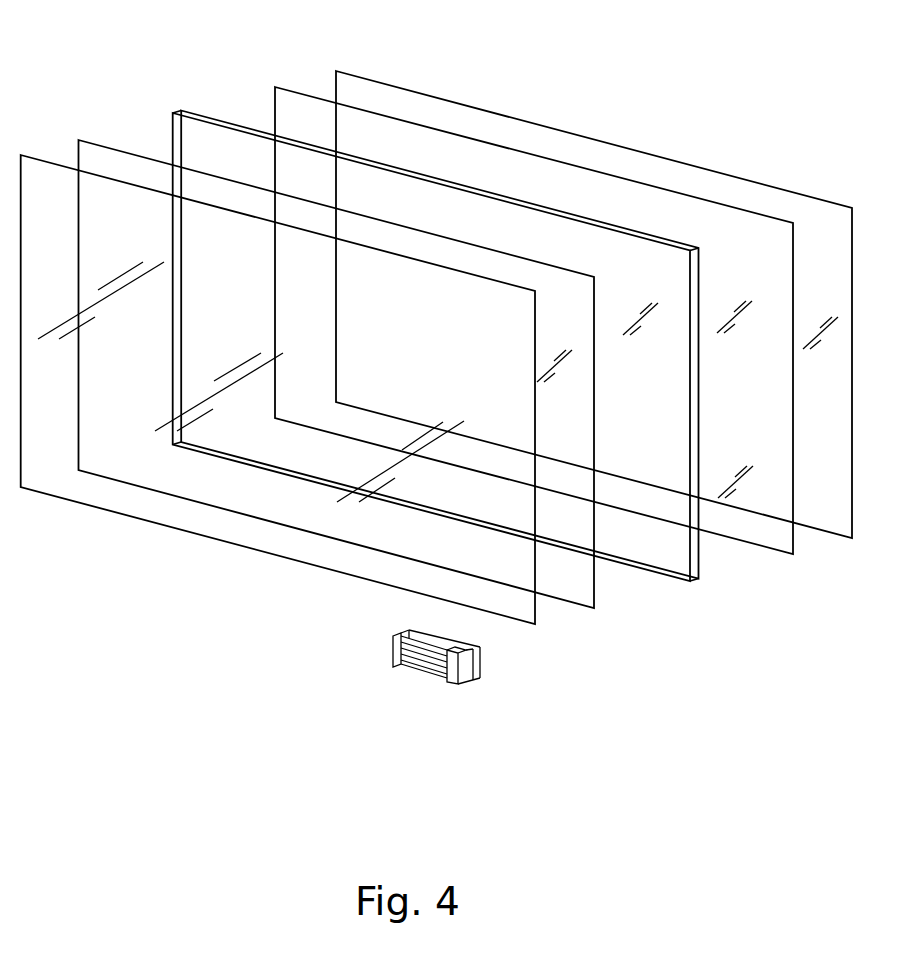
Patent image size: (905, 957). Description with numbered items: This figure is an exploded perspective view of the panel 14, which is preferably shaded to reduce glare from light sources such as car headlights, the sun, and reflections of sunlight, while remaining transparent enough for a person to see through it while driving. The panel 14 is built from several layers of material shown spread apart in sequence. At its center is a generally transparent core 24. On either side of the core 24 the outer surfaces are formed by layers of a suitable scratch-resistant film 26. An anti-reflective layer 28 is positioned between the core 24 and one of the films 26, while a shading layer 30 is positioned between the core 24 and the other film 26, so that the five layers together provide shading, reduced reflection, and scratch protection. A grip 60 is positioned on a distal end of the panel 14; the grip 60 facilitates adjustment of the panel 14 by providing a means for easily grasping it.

The panel 14 is at (176, 565).
The core 24 is at (199, 121).
The scratch-resistant film 26 is at (34, 187).
The anti-reflective layer 28 is at (297, 103).
The shading layer 30 is at (115, 162).
The grip 60 is at (452, 675).